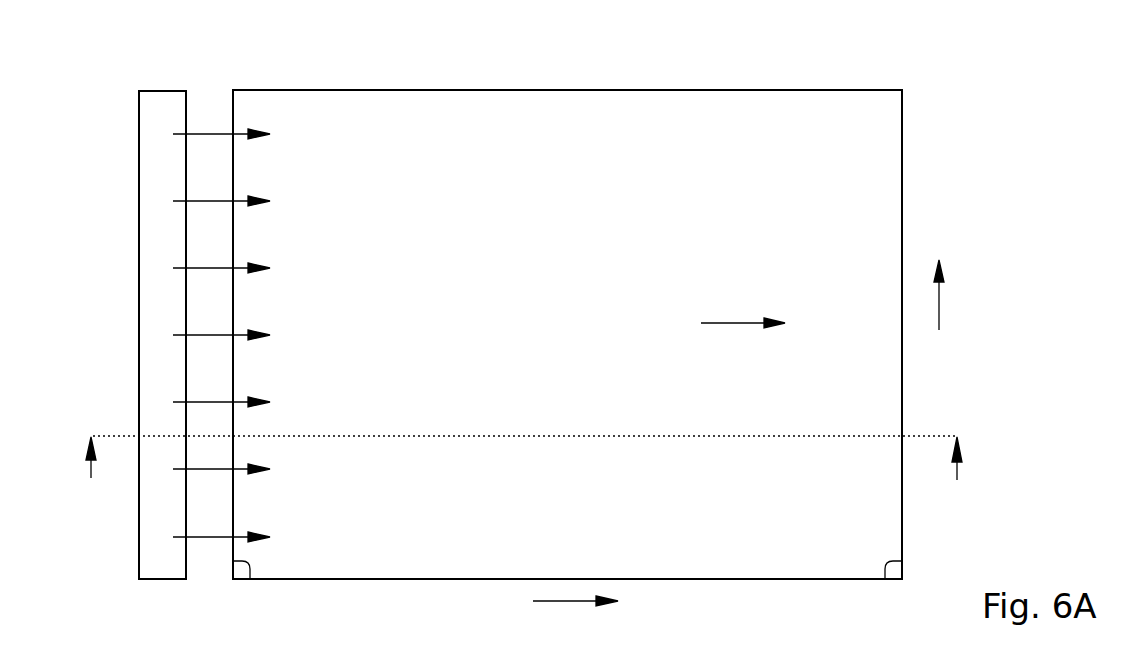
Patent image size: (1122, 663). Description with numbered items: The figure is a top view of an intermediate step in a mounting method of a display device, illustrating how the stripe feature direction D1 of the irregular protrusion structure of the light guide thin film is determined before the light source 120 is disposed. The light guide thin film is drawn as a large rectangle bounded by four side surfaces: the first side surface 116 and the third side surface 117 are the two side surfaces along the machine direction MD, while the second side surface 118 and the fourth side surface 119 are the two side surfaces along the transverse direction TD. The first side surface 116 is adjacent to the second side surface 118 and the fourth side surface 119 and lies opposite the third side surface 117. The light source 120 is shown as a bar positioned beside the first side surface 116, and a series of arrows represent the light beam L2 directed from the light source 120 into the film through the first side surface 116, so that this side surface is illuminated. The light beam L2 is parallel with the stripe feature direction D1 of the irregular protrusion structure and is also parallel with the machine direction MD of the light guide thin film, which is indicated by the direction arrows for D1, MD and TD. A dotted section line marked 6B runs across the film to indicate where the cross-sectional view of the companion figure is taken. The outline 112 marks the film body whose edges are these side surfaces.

The web / sheet 112 is at (525, 104).
The first side surface 116 is at (247, 580).
The third side surface 117 is at (886, 580).
The second side surface 118 is at (392, 90).
The fourth side surface 119 is at (391, 581).
The light source 120 is at (162, 255).
The light beam L2 is at (212, 132).
The stripe feature direction D1 is at (743, 337).
The transverse direction TD is at (956, 295).
The machine direction MD is at (575, 616).
The line 6B- 6B is at (521, 474).